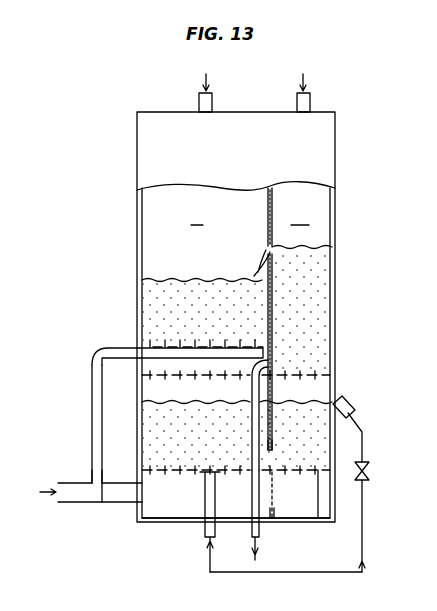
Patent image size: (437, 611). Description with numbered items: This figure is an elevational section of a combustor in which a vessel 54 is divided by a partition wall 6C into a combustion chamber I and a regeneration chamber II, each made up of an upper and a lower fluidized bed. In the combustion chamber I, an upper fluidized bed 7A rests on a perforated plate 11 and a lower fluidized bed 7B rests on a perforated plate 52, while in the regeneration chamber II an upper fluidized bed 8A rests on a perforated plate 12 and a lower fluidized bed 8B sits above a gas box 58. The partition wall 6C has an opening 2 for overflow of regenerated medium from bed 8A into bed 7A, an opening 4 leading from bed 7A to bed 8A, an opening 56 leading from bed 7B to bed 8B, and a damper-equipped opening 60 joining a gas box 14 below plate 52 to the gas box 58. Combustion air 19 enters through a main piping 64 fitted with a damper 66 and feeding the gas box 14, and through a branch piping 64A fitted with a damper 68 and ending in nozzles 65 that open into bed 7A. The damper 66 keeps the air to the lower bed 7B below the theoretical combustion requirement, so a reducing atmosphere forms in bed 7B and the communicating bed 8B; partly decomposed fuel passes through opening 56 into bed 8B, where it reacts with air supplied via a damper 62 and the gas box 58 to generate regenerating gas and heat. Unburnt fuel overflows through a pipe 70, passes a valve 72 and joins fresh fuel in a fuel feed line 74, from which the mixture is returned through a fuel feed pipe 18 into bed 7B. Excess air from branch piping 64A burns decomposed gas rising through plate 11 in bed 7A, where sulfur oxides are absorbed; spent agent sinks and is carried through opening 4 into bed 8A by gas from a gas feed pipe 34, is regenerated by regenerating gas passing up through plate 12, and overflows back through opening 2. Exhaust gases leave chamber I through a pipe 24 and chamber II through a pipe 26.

The opening 2 is at (267, 247).
The opening 4 is at (270, 362).
The partition wall 6C is at (268, 217).
The fluidized bed 7A is at (158, 300).
The fluidized bed 7B is at (158, 432).
The fluidized bed 8A is at (320, 297).
The fluidized bed 8B is at (296, 426).
The perforated plate 11 is at (150, 378).
The perforated plate 12 is at (318, 375).
The gas box 14 is at (163, 515).
The fuel feed pipe 18 is at (205, 506).
The air 19 is at (41, 505).
The pipe 24 is at (199, 84).
The pipe 26 is at (299, 84).
The gas feed pipe 34 is at (252, 505).
The perforated plate 52 is at (145, 469).
The vessel 54 is at (137, 162).
The opening 56 is at (274, 451).
The gas box 58 is at (315, 515).
The opening 60 is at (273, 513).
The damper 62 is at (279, 502).
The main piping 64 is at (80, 503).
The branch piping 64A is at (92, 418).
The nozzles 65 is at (152, 347).
The damper 66 is at (113, 489).
The damper 68 is at (93, 471).
The pipe 70 is at (355, 408).
The valve 72 is at (370, 471).
The fuel feed line 74 is at (306, 572).
The combustion chamber I is at (197, 216).
The regeneration chamber II is at (300, 216).